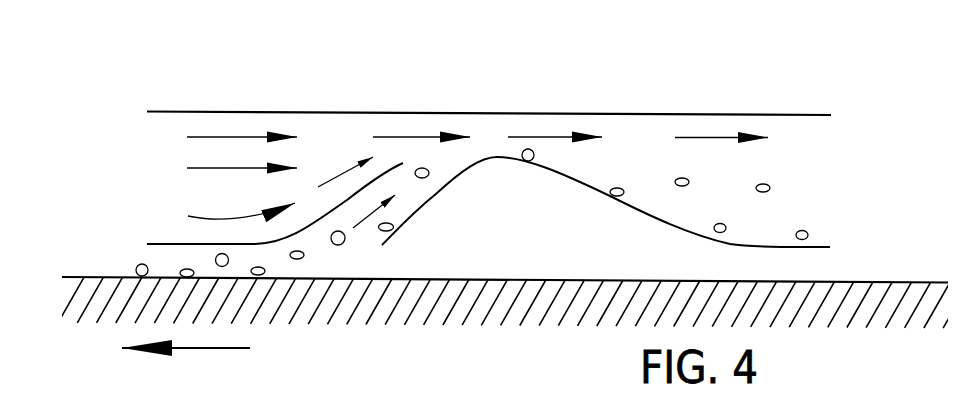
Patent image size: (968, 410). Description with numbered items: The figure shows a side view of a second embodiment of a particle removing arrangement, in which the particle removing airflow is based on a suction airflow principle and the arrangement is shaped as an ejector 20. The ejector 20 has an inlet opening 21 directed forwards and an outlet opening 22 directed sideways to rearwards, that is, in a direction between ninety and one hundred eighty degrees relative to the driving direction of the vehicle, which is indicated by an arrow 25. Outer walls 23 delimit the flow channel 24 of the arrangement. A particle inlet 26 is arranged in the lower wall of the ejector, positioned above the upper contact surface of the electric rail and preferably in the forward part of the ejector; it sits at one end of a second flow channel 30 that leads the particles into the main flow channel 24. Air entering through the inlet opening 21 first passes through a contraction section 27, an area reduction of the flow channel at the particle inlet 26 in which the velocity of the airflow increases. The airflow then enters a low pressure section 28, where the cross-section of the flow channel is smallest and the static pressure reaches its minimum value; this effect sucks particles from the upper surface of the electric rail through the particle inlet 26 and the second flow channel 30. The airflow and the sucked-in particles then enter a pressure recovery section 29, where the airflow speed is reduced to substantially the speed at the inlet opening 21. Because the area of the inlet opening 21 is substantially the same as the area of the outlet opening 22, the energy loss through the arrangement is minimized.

The ejector 20 is at (540, 70).
The inlet opening 21 is at (158, 180).
The outlet opening 22 is at (821, 183).
The outer walls 23 is at (773, 114).
The flow channel 24 is at (635, 145).
The arrow 25 is at (213, 348).
The particle inlet 26 is at (355, 247).
The contraction section 27 is at (333, 153).
The low pressure section 28 is at (483, 135).
The pressure recovery section 29 is at (705, 90).
The second flow channel 30 is at (420, 212).